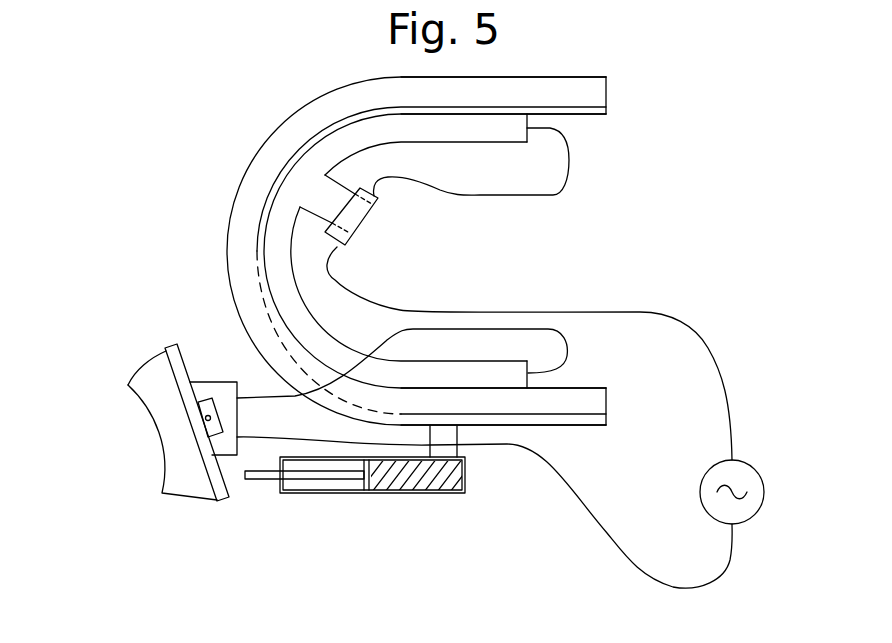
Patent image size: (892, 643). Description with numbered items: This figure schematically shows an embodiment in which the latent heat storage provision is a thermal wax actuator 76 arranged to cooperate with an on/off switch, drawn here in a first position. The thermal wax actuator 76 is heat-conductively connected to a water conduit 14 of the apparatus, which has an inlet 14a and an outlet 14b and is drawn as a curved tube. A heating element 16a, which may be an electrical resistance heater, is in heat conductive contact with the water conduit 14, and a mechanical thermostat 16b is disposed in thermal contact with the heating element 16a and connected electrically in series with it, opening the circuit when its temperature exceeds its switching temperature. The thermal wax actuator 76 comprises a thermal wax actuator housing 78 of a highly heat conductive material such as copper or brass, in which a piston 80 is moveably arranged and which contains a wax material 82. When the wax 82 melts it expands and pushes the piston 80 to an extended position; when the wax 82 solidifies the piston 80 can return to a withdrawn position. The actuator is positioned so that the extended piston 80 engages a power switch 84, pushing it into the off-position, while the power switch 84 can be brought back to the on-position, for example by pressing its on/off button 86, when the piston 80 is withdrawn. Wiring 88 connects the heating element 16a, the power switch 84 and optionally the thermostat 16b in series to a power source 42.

The water conduit 14 is at (262, 172).
The inlet 14a is at (592, 404).
The outlet 14b is at (597, 92).
The heating element 16a is at (277, 243).
The mechanical thermostat 16b is at (350, 218).
The power source 42 is at (755, 478).
The thermal wax actuator 76 is at (396, 532).
The thermal wax actuator housing 78 is at (320, 494).
The piston 80 is at (265, 475).
The wax material 82 is at (440, 478).
The power switch 84 is at (193, 328).
The on/off button 86 is at (184, 483).
The wiring 88 is at (553, 182).